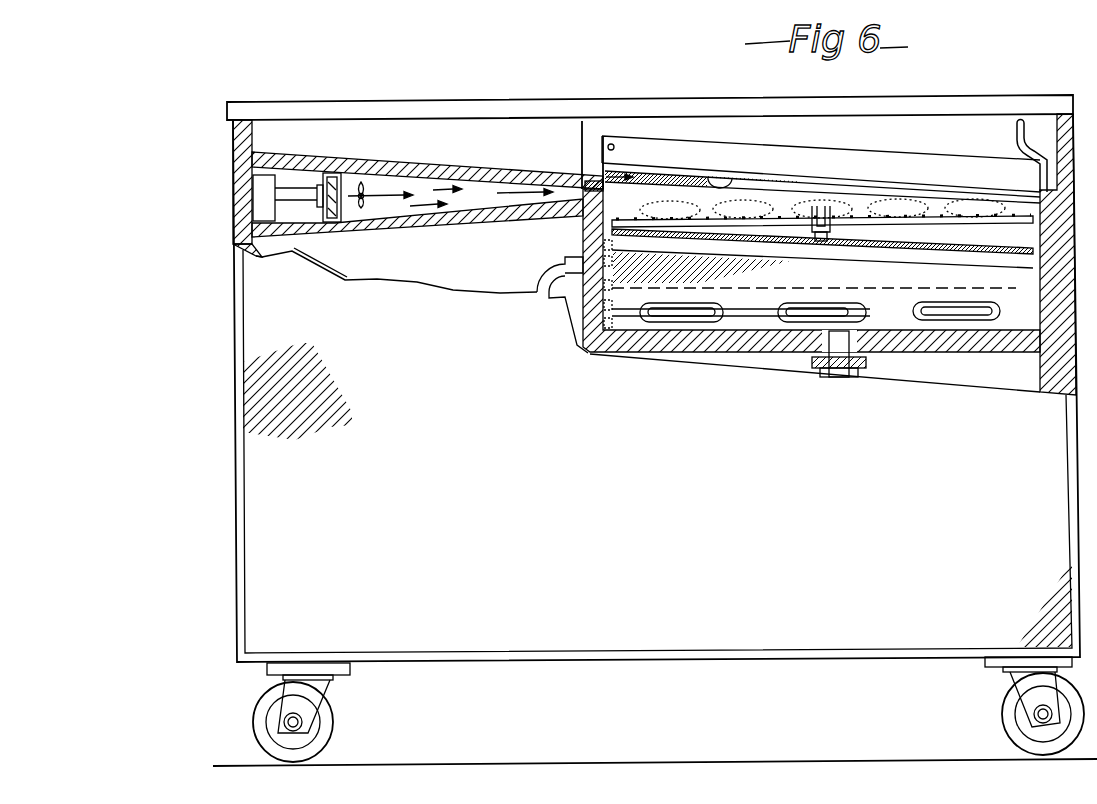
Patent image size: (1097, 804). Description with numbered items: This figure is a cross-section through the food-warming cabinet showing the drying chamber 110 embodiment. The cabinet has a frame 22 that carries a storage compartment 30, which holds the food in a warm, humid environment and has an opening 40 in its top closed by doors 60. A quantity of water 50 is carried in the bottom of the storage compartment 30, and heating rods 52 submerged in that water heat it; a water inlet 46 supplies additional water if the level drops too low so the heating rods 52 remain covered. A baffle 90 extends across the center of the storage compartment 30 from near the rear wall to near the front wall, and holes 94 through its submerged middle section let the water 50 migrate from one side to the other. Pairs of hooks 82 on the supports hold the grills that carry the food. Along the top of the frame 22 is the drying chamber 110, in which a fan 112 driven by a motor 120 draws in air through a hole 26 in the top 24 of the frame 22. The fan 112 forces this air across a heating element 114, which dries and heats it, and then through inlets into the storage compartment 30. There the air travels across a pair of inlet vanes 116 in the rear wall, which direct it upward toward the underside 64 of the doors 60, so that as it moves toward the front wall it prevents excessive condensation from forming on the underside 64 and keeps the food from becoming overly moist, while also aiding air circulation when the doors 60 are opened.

The frame 22 is at (232, 177).
The top 24 is at (500, 152).
The hole 26 is at (302, 186).
The storage compartment 30 is at (750, 186).
The opening 40 is at (785, 191).
The water inlet 46 is at (605, 258).
The water 50 is at (1016, 290).
The heating rods 52 is at (699, 322).
The doors 60 is at (651, 136).
The underside 64 is at (740, 172).
The hooks 82 is at (829, 209).
The baffle 90 is at (920, 255).
The holes 94 is at (683, 321).
The drying chamber 110 is at (362, 146).
The fan 112 is at (338, 216).
The heating element 114 is at (367, 193).
The inlet vanes 116 is at (598, 182).
The motor 120 is at (233, 223).